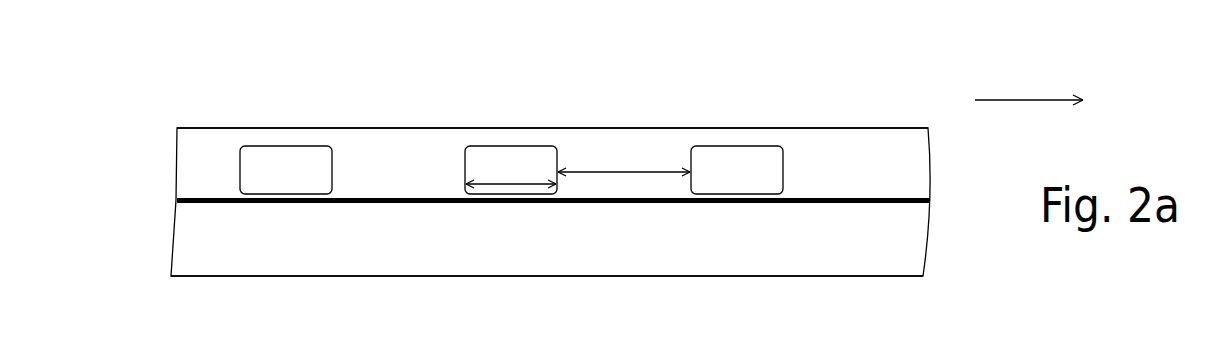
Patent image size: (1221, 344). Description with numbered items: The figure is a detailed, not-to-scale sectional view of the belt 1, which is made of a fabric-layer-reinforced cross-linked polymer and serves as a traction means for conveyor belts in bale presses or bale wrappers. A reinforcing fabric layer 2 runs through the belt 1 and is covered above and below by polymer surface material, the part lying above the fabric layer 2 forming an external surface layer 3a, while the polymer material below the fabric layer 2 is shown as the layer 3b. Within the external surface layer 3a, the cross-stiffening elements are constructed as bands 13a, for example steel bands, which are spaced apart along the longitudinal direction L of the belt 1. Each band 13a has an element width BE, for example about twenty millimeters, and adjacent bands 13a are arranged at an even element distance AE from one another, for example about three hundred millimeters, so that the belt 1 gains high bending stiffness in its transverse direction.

The belt 1 is at (833, 72).
The reinforcing fabric layer 2 is at (197, 198).
The external surface layer 3a is at (207, 153).
The lower layer 3b is at (217, 257).
The bands 13a is at (477, 157).
The element width BE is at (510, 183).
The element distance AE is at (608, 172).
The longitudinal direction L is at (1029, 74).